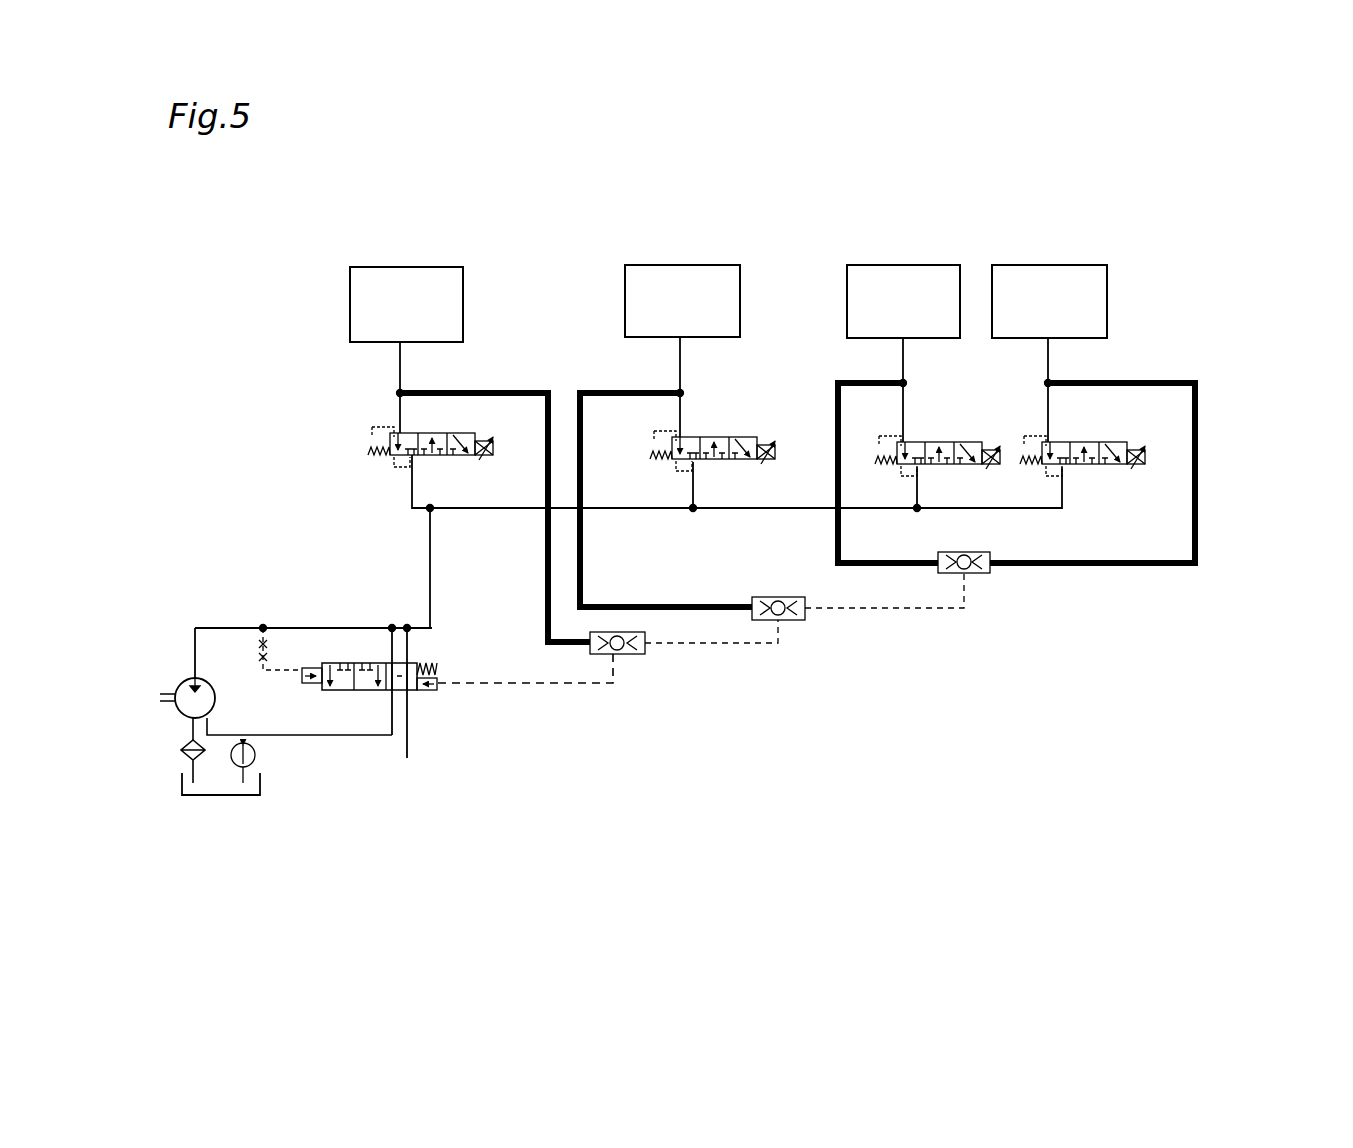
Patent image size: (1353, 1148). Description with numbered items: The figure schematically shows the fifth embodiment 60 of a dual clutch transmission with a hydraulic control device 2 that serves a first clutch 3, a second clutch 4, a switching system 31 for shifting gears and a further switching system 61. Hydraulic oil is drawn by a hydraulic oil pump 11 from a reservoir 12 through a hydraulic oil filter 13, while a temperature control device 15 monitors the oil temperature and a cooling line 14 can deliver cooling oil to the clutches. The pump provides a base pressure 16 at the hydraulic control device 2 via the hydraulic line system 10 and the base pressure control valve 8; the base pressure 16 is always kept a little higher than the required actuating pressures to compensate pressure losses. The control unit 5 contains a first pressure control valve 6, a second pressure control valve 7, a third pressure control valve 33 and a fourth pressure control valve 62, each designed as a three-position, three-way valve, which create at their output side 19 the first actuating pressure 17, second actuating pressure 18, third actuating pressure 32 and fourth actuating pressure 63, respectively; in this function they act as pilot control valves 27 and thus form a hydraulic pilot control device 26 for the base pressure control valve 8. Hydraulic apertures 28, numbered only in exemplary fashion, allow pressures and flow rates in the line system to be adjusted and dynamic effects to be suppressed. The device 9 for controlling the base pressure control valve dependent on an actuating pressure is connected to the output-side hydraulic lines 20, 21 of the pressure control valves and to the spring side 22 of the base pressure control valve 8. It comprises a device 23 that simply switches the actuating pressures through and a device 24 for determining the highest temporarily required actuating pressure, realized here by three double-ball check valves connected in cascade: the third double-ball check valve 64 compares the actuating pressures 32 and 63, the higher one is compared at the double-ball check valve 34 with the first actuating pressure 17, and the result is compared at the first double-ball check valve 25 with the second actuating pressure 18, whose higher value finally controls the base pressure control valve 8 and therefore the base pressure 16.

The hydraulic control device 2 is at (1102, 768).
The first clutch 3 is at (682, 301).
The second clutch 4 is at (406, 304).
The control unit 5 is at (286, 456).
The first pressure control valve 6 is at (755, 414).
The second pressure control valve 7 is at (386, 516).
The base pressure control valve 8 is at (360, 712).
The device for controlling the base pressure control valve dependent on an actuating 9 is at (908, 696).
The hydraulic line system 10 is at (760, 515).
The hydraulic oil pump 11 is at (183, 685).
The reservoir 12 is at (210, 796).
The hydraulic oil filter 13 is at (182, 747).
The cooling line 14 is at (408, 740).
The temperature control device 15 is at (256, 752).
The base pressure 16 is at (293, 628).
The first actuating pressure 17 is at (680, 368).
The second actuating pressure 18 is at (400, 365).
The output side 19 is at (818, 389).
The output-side hydraulic line 20 is at (676, 412).
The output-side hydraulic line 21 is at (408, 410).
The spring side 22 is at (432, 690).
The device that switches the actuating pressures through 23 is at (857, 718).
The device for determining the highest temporarily required actuating pressure 24 is at (1084, 663).
The first double-ball check valve 25 is at (622, 656).
The hydraulic pilot control device 26 is at (1218, 455).
The pilot control valve 27 is at (322, 416).
The hydraulic aperture 28 is at (262, 645).
The switching system 31 is at (903, 301).
The third actuating pressure 32 is at (903, 362).
The third pressure control valve 33 is at (955, 433).
The double-ball check valve 34 is at (795, 622).
The fifth embodiment 60 is at (1163, 173).
The further switching system 61 is at (1049, 301).
The fourth pressure control valve 62 is at (1090, 492).
The fourth actuating pressure 63 is at (1048, 365).
The third double-ball check valve 64 is at (980, 574).